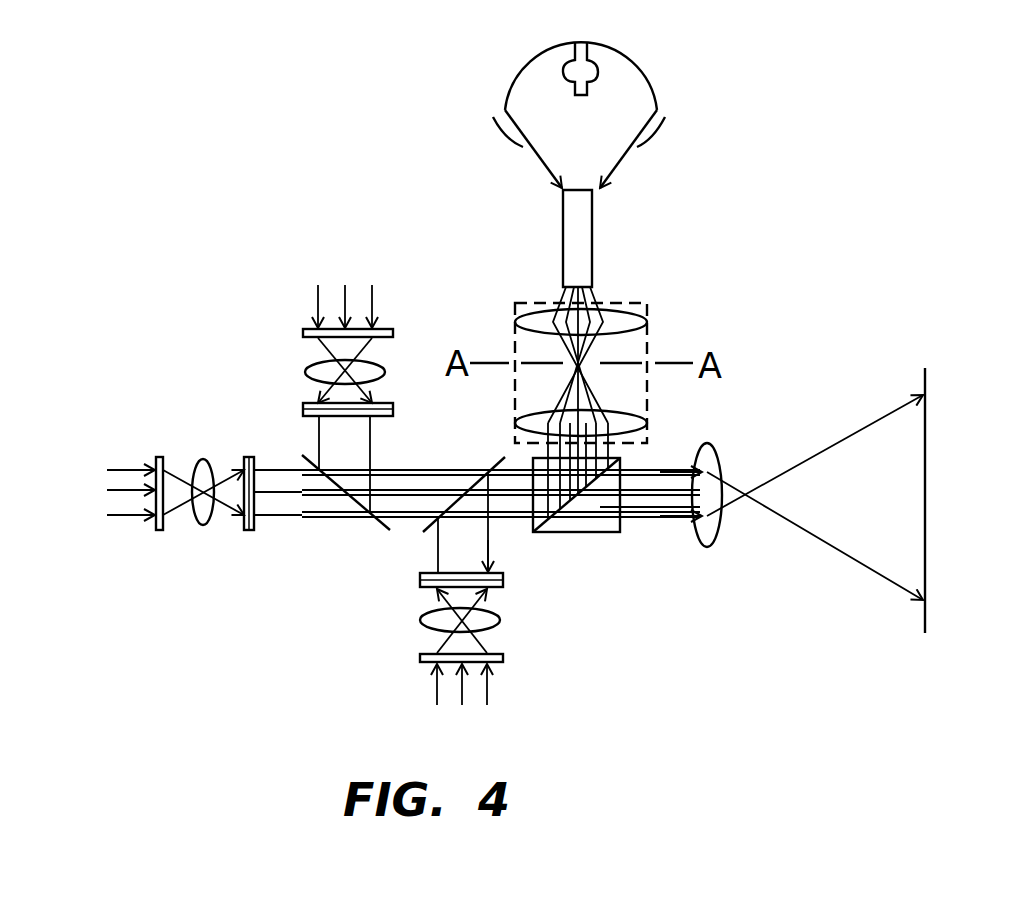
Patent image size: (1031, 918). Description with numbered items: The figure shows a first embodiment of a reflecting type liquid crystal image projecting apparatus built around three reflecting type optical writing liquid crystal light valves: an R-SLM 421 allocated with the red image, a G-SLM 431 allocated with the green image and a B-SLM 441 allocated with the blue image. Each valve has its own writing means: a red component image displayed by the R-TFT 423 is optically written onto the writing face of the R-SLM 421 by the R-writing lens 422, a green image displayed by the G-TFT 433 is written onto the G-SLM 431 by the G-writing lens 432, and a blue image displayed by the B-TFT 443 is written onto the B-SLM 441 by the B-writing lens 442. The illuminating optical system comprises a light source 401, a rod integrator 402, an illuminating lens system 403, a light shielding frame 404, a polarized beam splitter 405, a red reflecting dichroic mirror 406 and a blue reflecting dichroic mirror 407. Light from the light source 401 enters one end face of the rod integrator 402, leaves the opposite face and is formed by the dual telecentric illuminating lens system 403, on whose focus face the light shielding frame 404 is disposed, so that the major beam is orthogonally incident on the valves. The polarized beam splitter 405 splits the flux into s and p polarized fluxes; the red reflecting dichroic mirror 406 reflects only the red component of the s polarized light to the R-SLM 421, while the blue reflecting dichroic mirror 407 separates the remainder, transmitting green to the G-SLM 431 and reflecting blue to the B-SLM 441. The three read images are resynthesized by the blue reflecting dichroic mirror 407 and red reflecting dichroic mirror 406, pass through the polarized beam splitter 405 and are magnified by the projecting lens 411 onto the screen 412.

The light source 401 is at (585, 72).
The rod integrator 402 is at (584, 240).
The illuminating lens system 403 is at (630, 303).
The light shielding frame 404 is at (632, 362).
The polarized beam splitter 405 is at (603, 530).
The red reflecting dichroic mirror 406 is at (423, 528).
The blue reflecting dichroic mirror 407 is at (386, 530).
The projecting lens 411 is at (711, 462).
The screen 412 is at (925, 380).
The reflecting type optical writing liquid crystal light valve (R-SLM) 421 is at (504, 582).
The R-writing lens 422 is at (490, 618).
The R-TFT liquid crystal panel 423 is at (504, 660).
The reflecting type optical writing liquid crystal light valve (G-SLM) 431 is at (249, 532).
The G-writing lens 432 is at (200, 515).
The G-TFT liquid crystal panel 433 is at (157, 455).
The reflecting type optical writing liquid crystal light valve (B-SLM) 441 is at (303, 409).
The B-writing lens 442 is at (375, 370).
The B-TFT liquid crystal panel 443 is at (303, 333).